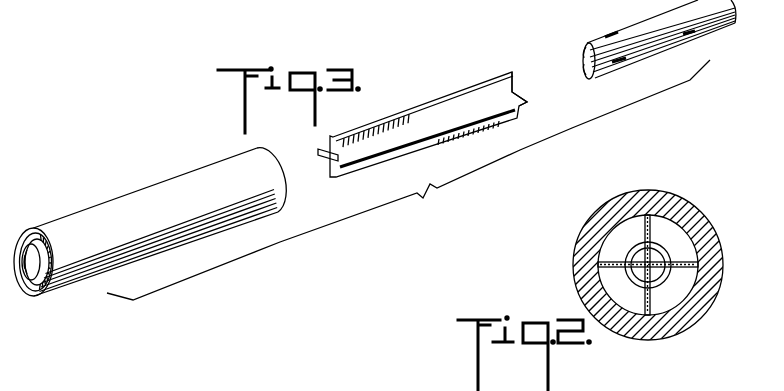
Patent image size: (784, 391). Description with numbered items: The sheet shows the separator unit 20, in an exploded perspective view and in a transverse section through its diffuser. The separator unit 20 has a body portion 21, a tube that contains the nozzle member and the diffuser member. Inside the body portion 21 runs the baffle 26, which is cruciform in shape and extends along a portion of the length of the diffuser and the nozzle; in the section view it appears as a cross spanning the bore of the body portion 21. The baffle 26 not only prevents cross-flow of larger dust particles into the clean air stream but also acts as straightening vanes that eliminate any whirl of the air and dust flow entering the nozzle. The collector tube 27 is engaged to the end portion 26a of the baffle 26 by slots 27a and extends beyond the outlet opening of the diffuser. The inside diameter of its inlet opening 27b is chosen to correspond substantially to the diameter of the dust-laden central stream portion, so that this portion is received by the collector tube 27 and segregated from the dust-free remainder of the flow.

In FIG. 3, the separator unit 20 is at (408, 180).
In FIG. 3, the body portion 21 is at (172, 184).
In FIG. 2, the body portion 21 is at (702, 228).
In FIG. 3, the baffle 26 is at (420, 110).
In FIG. 2, the baffle 26 is at (645, 229).
In FIG. 3, the end portion of baffle 26a is at (504, 80).
In FIG. 3, the collector tube 27 is at (687, 35).
In FIG. 2, the collector tube 27 is at (670, 253).
In FIG. 3, the slots 27a is at (617, 63).
In FIG. 3, the inlet opening of collector tube 27b is at (583, 68).